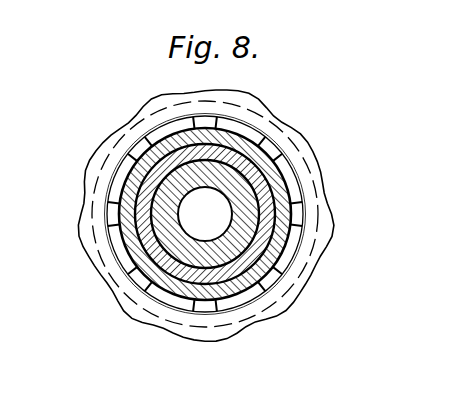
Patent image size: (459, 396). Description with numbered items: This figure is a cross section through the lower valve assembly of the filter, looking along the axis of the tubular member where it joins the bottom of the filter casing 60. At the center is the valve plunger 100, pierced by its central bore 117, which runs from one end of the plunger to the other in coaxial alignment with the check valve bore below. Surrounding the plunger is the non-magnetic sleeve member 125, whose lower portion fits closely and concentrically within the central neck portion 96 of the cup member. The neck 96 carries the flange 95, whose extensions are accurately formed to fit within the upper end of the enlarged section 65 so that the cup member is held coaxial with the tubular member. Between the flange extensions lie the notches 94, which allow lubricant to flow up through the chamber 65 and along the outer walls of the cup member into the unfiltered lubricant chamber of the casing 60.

The filter casing 60 is at (158, 327).
The enlarged section 65 is at (238, 124).
The notches 94 is at (107, 204).
The flange 95 is at (291, 262).
The central neck portion 96 is at (268, 158).
The valve plunger 100 is at (176, 140).
The central bore 117 is at (258, 290).
The sleeve member 125 is at (140, 268).